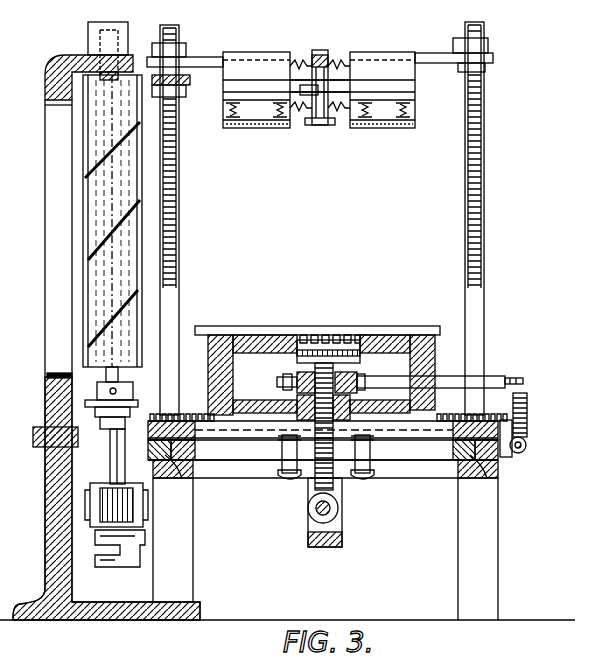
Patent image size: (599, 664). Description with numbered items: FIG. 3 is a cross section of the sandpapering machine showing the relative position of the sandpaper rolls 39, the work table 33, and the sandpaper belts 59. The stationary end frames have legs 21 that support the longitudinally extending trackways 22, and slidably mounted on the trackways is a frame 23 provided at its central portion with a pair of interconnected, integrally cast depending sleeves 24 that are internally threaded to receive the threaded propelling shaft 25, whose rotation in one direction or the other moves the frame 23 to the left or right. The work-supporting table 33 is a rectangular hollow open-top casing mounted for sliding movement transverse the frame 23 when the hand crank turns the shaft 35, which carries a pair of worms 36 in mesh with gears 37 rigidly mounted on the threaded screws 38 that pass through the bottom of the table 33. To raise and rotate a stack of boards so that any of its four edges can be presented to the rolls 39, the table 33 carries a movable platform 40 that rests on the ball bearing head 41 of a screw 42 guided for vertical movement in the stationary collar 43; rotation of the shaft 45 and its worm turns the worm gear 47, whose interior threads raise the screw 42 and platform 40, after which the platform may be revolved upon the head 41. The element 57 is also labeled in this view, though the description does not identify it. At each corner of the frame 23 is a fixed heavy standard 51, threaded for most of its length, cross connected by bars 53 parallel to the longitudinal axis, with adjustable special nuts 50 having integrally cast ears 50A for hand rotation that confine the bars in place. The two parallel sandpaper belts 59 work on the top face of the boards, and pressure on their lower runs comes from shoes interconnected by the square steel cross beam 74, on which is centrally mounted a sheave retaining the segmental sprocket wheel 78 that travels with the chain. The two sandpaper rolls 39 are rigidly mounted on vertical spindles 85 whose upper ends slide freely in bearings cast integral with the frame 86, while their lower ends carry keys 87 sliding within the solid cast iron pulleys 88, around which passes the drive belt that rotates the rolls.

The legs 21 is at (192, 503).
The trackways 22 is at (188, 481).
The frame 23 is at (196, 450).
The depending sleeves 24 is at (343, 540).
The threaded propelling shaft 25 is at (343, 509).
The work-supporting table 33 is at (195, 425).
The shaft 35 is at (522, 455).
The worms 36 is at (527, 444).
The gears 37 is at (528, 406).
The threaded screws 38 is at (200, 420).
The sand-paper rolls 39 is at (100, 240).
The movable platform 40 is at (244, 328).
The ball bearing head 41 is at (282, 366).
The screw 42 is at (347, 480).
The stationary collar 43 is at (356, 438).
The shaft 45 is at (488, 377).
The worm gear 47 is at (360, 376).
The special nuts 50 is at (176, 97).
The ears or integrally cast arms 50A is at (178, 49).
The fixed heavy standard 51 is at (178, 303).
The bars 53 is at (190, 81).
The worm gear 57 is at (303, 347).
The sand papering traveling belts 59 is at (254, 126).
The cross beam 74 is at (411, 85).
The sprocket wheel 78 is at (326, 52).
The vertical spindles 85 is at (100, 40).
The frame 86 is at (45, 172).
The keys 87 is at (115, 465).
The pulleys 88 is at (122, 26).